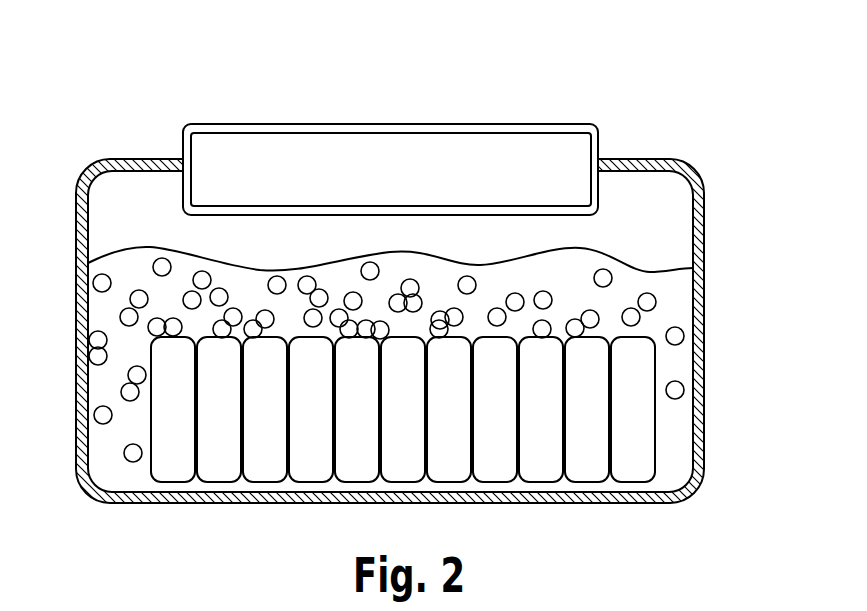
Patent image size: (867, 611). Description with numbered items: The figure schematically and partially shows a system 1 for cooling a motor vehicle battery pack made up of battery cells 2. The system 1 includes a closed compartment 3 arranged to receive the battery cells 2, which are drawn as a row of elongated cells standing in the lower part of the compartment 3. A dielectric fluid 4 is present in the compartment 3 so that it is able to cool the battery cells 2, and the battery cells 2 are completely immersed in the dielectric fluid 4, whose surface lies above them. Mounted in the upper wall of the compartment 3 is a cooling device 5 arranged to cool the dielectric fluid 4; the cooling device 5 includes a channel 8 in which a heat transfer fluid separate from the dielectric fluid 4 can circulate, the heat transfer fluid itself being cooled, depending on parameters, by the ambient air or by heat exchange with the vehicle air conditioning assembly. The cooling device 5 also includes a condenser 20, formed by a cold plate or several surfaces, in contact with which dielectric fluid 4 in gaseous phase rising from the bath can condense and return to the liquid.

The system for cooling a motor vehicle battery pack 1 is at (430, 274).
The battery cells 2 is at (647, 437).
The closed compartment 3 is at (700, 242).
The dielectric fluid 4 is at (675, 293).
The cooling device 5 is at (390, 130).
The channel 8 is at (495, 134).
The condenser 20 is at (213, 215).